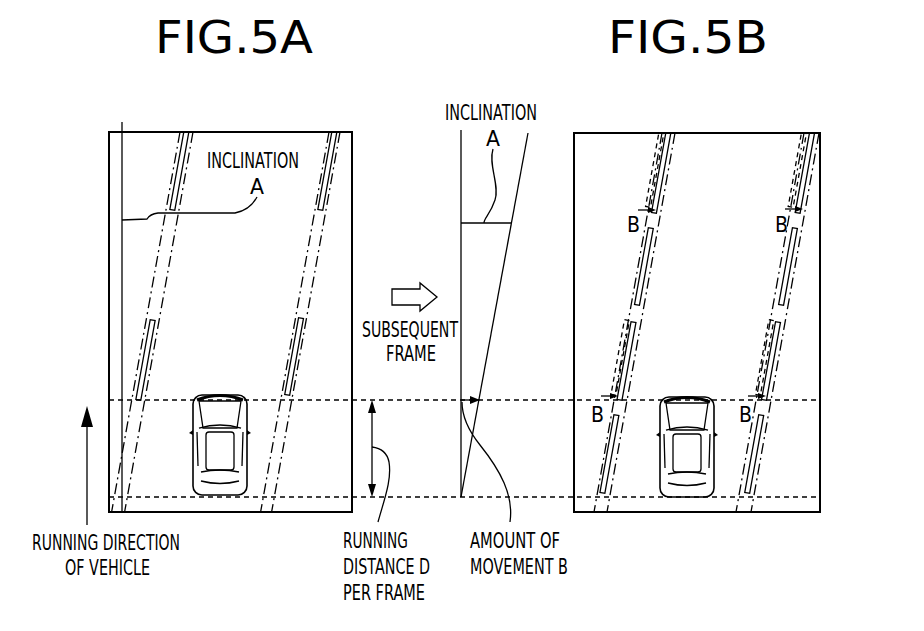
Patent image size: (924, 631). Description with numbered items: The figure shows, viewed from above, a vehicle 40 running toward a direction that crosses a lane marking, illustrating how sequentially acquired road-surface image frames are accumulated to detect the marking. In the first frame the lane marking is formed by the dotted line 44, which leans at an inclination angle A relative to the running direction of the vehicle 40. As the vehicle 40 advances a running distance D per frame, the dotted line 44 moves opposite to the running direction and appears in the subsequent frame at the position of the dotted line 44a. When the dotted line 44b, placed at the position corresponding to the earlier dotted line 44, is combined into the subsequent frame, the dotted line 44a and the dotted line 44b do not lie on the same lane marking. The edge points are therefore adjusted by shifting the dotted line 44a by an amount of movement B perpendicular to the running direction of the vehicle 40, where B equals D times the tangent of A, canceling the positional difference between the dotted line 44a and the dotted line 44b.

In FIG. 5A, the vehicle 40 is at (244, 487).
In FIG. 5B, the vehicle 40 is at (709, 488).
In FIG. 5A, the dotted line 44 is at (177, 172).
In FIG. 5B, the dotted line 44a is at (645, 262).
In FIG. 5B, the dotted line 44b is at (662, 168).